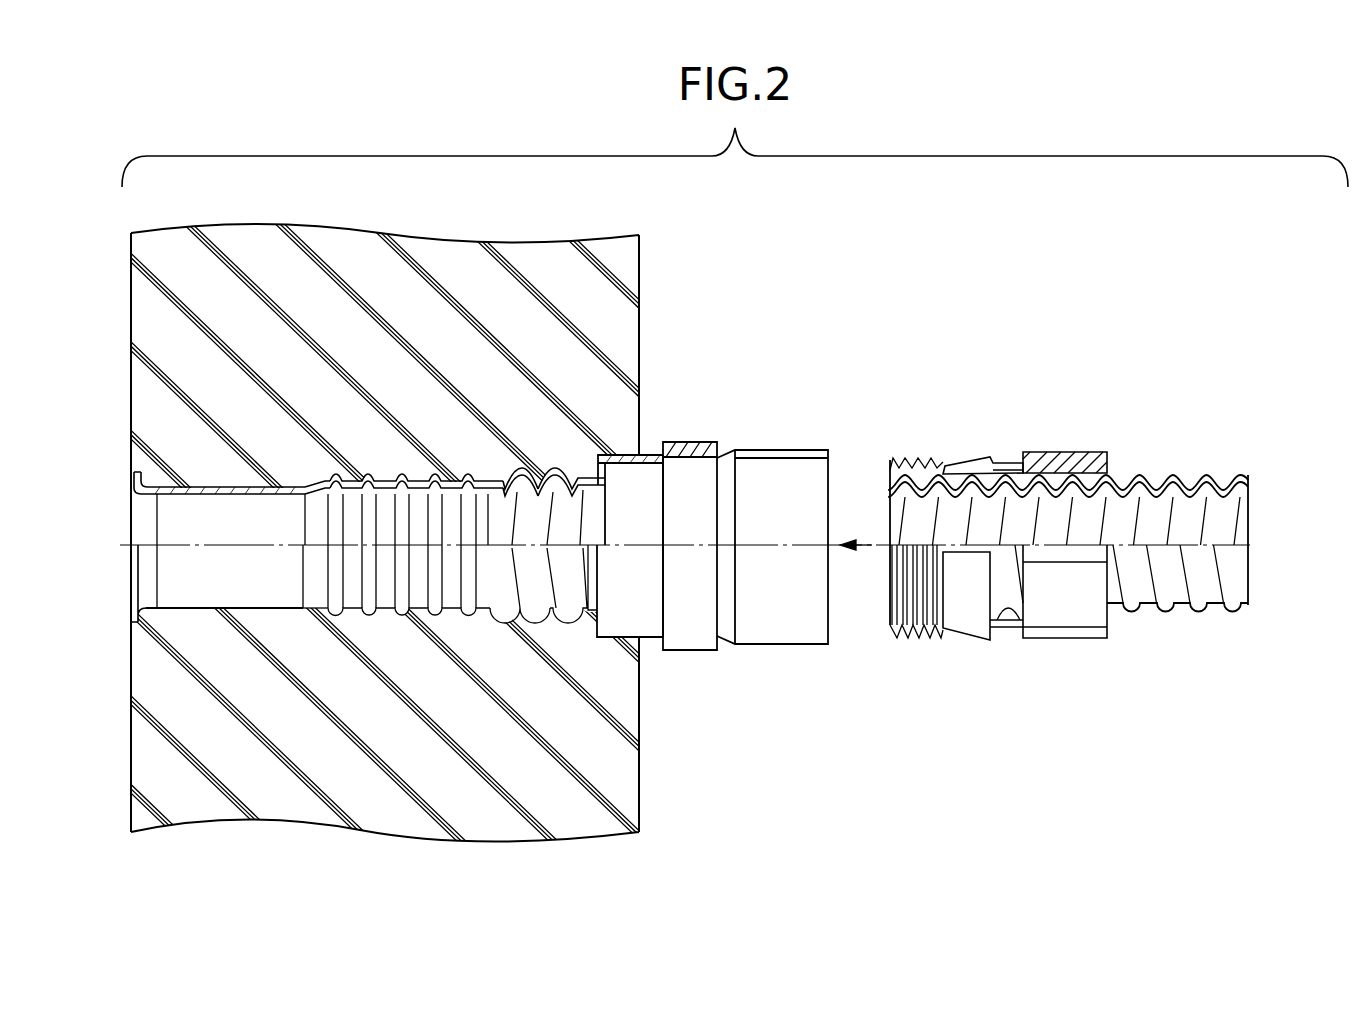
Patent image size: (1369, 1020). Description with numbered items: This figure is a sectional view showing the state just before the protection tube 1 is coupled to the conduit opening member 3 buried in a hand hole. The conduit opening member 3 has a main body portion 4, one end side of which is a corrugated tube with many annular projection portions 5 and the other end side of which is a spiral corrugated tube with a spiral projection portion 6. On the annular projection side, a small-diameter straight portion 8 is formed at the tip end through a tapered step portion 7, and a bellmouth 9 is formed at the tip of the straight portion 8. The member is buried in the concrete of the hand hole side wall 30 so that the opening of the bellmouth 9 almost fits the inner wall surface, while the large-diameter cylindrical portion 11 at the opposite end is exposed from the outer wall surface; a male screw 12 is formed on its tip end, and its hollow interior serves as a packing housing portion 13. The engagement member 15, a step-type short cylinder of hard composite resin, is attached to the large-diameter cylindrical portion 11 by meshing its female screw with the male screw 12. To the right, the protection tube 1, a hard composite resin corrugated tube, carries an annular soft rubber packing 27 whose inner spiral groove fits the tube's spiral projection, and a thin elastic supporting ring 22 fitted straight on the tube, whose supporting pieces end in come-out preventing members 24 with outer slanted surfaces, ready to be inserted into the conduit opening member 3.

The protection tube 1 is at (1178, 469).
The conduit opening member 3 is at (523, 462).
The main body portion 4 is at (452, 470).
The annular projection portions 5 is at (368, 478).
The spiral projection portion 6 is at (561, 470).
The tapered step portion 7 is at (315, 483).
The straight portion 8 is at (275, 484).
The bellmouth 9 is at (142, 478).
The large-diameter cylindrical portion 11 is at (648, 444).
The male screw 12 is at (693, 452).
The packing housing portion 13 is at (617, 462).
The engagement member 15 is at (772, 448).
The supporting ring 22 is at (1064, 458).
The come-out preventing members 24 is at (974, 460).
The packing 27 is at (911, 466).
The hand hole side wall 30 is at (622, 299).